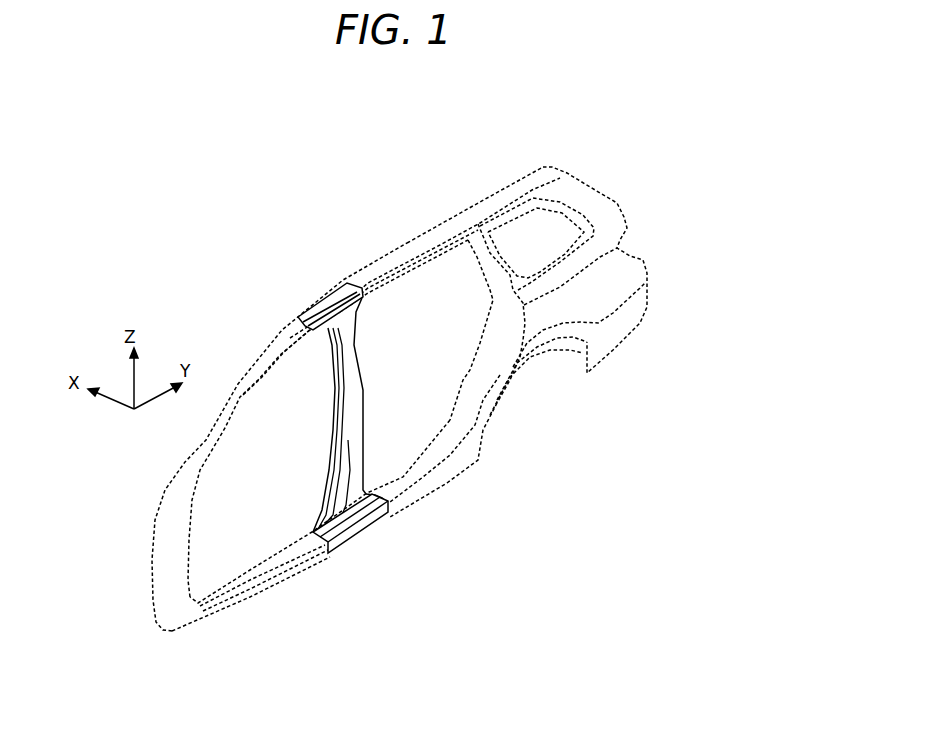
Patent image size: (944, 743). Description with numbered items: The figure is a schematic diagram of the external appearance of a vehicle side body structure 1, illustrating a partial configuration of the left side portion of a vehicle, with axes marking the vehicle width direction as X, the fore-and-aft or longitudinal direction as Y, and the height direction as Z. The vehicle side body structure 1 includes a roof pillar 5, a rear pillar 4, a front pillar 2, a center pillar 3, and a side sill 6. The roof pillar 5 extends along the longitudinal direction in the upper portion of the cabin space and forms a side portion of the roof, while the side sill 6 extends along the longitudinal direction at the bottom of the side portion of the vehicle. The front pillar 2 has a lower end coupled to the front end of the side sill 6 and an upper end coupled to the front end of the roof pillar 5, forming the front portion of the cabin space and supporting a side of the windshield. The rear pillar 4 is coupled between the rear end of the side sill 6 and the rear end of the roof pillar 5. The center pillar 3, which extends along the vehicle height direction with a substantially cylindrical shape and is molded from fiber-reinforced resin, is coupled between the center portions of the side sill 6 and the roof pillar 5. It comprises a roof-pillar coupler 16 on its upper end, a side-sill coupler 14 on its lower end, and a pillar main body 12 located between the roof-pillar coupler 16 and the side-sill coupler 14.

The vehicle side body structure 1 is at (566, 142).
The front pillar 2 is at (163, 479).
The center pillar 3 is at (371, 372).
The rear pillar 4 is at (478, 343).
The roof pillar 5 is at (409, 237).
The side sill 6 is at (437, 511).
The pillar main body 12 is at (357, 427).
The side-sill coupler 14 is at (355, 532).
The roof-pillar coupler 16 is at (338, 290).